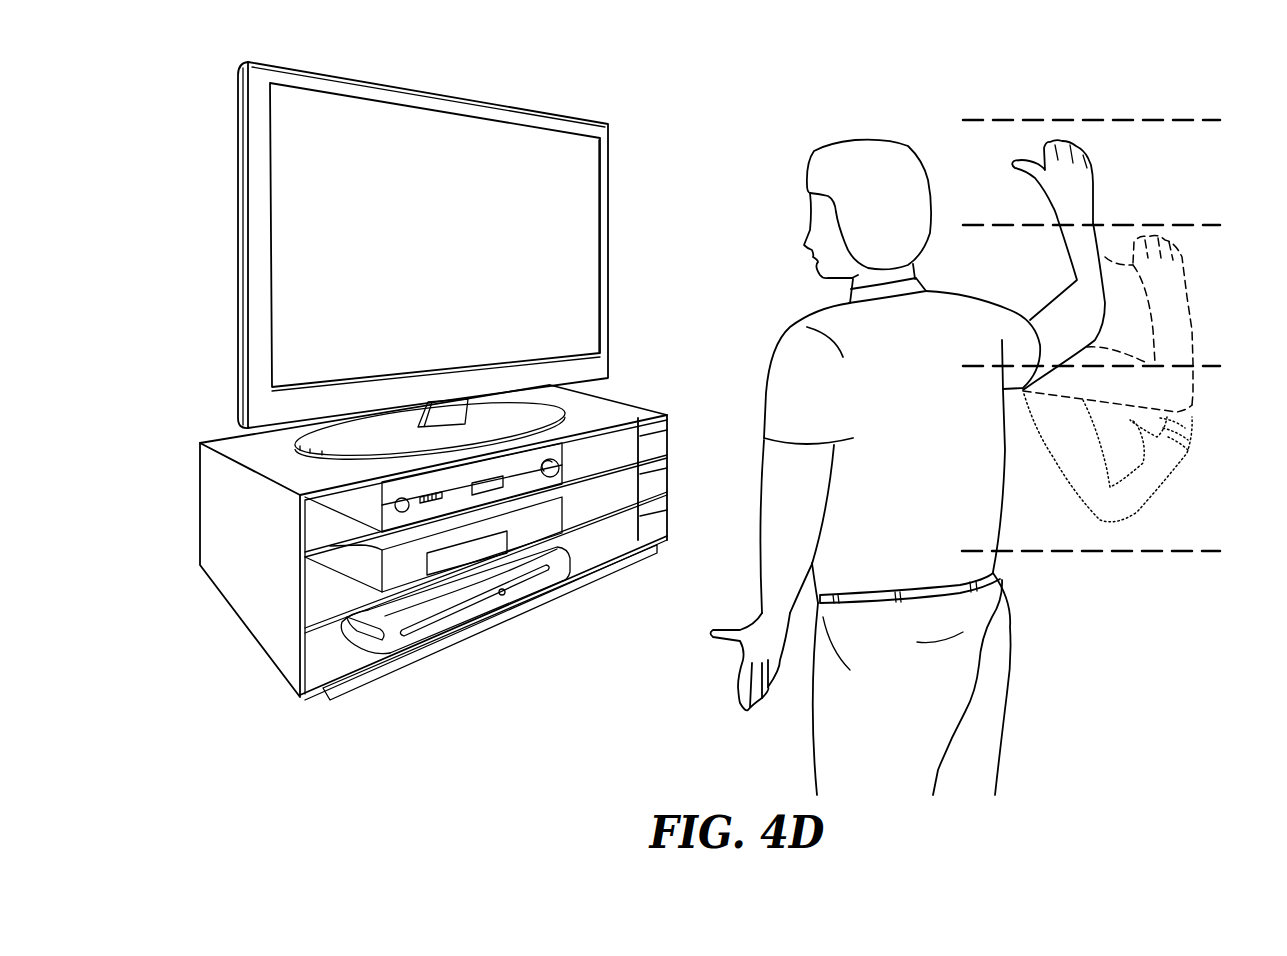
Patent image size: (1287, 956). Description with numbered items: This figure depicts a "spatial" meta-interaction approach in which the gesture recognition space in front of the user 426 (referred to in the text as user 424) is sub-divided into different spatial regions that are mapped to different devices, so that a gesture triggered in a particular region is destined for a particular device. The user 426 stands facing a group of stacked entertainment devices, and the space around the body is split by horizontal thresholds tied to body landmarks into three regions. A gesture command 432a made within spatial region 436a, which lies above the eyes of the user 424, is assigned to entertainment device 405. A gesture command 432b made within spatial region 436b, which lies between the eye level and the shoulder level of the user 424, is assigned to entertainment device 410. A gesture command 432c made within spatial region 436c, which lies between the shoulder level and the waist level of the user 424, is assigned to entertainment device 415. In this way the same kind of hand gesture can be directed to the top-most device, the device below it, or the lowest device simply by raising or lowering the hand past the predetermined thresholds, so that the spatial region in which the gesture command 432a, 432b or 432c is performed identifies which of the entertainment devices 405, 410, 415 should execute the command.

The entertainment device 405 is at (368, 529).
The entertainment device 410 is at (368, 591).
The entertainment device 415 is at (372, 651).
The user 424 is at (237, 220).
The user 426 is at (779, 346).
The gesture command 432a is at (1100, 176).
The gesture command 432b is at (1168, 235).
The gesture command 432c is at (1200, 418).
The spatial region 436a is at (963, 150).
The spatial region 436b is at (967, 358).
The spatial region 436c is at (970, 543).